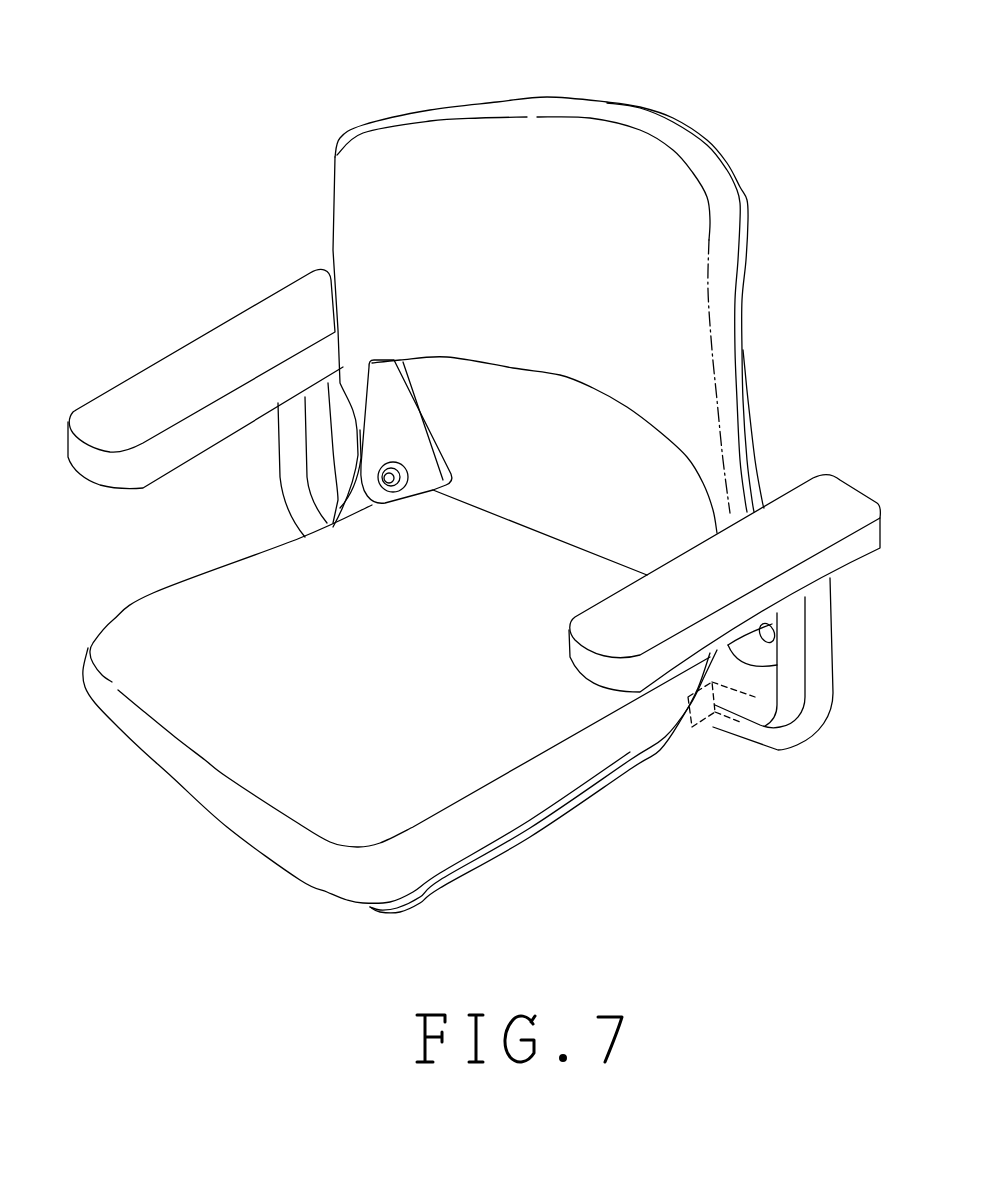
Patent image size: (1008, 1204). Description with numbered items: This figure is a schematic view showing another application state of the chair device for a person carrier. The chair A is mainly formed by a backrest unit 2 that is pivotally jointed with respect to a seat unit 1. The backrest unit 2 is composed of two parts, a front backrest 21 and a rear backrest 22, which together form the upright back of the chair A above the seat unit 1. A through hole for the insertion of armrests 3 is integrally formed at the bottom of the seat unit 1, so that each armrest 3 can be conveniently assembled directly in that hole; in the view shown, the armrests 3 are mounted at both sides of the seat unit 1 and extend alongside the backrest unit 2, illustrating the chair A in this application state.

The seat unit 1 is at (562, 810).
The backrest unit 2 is at (746, 285).
The front backrest 21 is at (453, 183).
The rear backrest 22 is at (748, 407).
The armrest 3 is at (772, 737).
The chair A is at (648, 100).